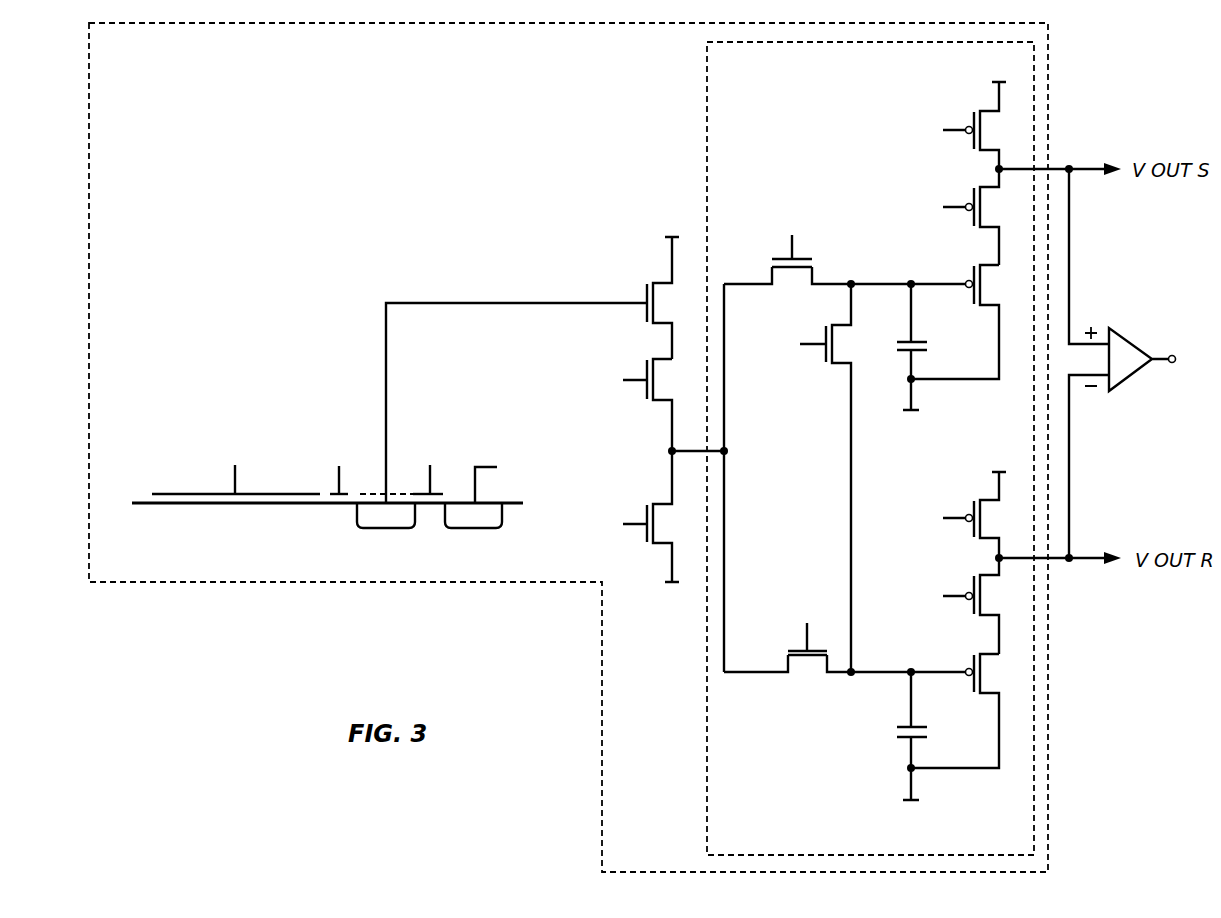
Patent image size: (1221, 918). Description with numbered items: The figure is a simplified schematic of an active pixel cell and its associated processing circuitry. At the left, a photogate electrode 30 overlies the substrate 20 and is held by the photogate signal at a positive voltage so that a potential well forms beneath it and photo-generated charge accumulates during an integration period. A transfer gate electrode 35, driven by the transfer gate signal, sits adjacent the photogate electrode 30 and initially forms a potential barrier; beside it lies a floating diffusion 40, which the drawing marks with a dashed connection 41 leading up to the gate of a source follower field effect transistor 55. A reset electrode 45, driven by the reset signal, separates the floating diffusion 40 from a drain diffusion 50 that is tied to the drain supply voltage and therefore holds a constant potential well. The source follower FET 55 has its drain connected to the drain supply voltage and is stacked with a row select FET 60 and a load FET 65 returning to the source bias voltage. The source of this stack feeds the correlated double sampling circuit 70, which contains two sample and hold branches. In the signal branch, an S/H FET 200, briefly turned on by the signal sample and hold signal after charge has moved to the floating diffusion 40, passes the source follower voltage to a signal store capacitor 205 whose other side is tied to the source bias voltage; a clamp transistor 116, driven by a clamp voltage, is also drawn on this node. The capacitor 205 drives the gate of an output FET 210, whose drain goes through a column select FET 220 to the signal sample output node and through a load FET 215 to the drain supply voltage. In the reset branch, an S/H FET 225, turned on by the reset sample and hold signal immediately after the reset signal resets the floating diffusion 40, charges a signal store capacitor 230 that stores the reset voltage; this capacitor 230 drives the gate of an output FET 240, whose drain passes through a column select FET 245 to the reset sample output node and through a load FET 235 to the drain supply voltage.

The substrate 20 is at (110, 585).
The photogate electrode 30 is at (176, 494).
The transfer gate electrode 35 is at (331, 494).
The floating diffusion 40 is at (385, 528).
The floating diffusion node connection 41 is at (383, 493).
The reset electrode 45 is at (438, 494).
The drain diffusion 50 is at (475, 528).
The source follower field effect transistor 55 is at (647, 289).
The row select FET 60 is at (647, 366).
The load FET 65 is at (647, 508).
The correlated double sampling circuit 70 is at (705, 107).
The clamp transistor 116 is at (826, 330).
The S/H FET 200 is at (785, 260).
The signal store capacitor 205 is at (916, 341).
The output FET 210 is at (973, 271).
The load FET 215 is at (973, 117).
The column select FET 220 is at (973, 193).
The S/H FET 225 is at (797, 651).
The signal store capacitor 230 is at (917, 727).
The load FET 235 is at (973, 506).
The output FET 240 is at (973, 661).
The column select FET 245 is at (973, 582).